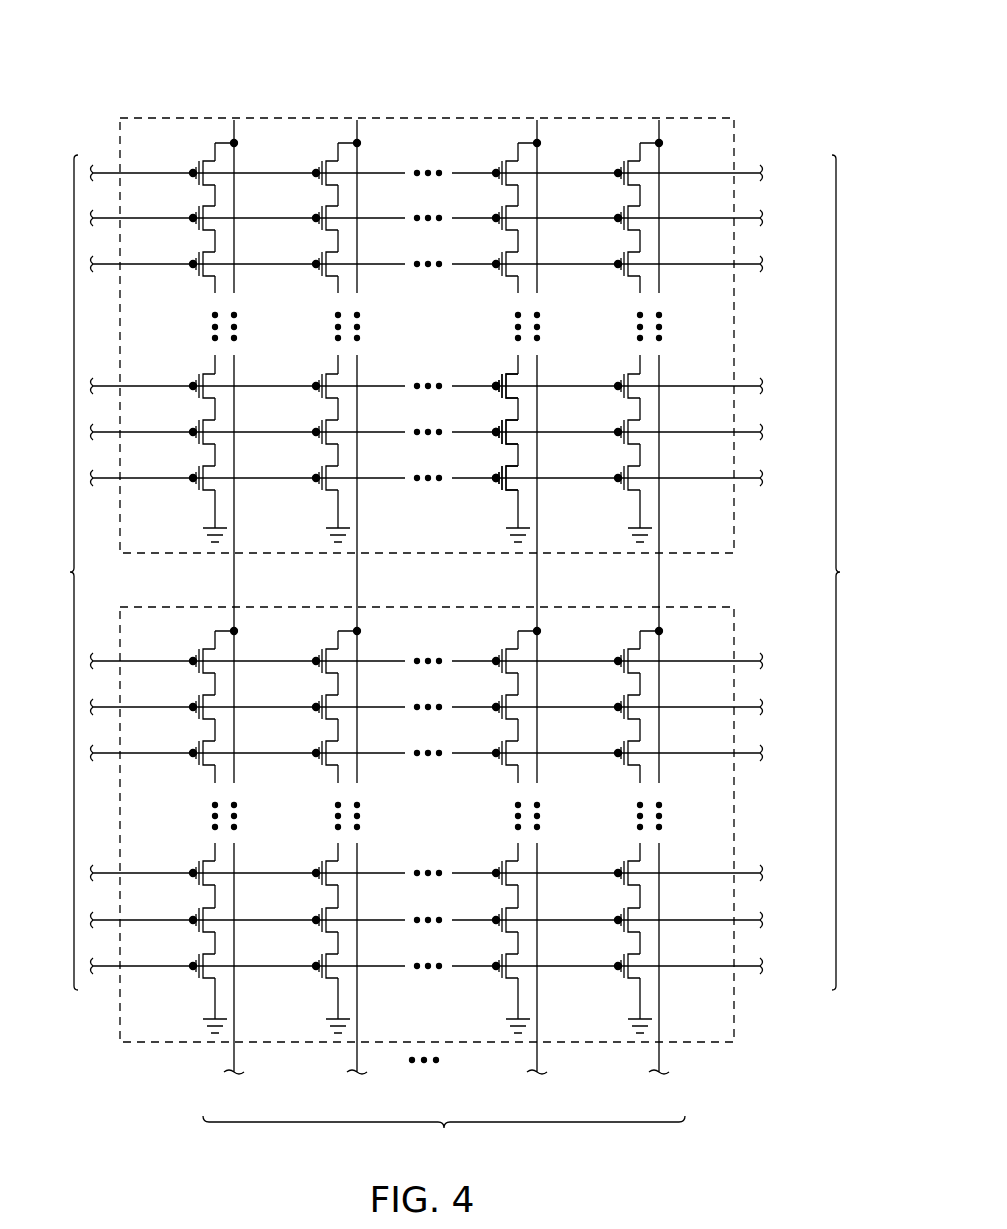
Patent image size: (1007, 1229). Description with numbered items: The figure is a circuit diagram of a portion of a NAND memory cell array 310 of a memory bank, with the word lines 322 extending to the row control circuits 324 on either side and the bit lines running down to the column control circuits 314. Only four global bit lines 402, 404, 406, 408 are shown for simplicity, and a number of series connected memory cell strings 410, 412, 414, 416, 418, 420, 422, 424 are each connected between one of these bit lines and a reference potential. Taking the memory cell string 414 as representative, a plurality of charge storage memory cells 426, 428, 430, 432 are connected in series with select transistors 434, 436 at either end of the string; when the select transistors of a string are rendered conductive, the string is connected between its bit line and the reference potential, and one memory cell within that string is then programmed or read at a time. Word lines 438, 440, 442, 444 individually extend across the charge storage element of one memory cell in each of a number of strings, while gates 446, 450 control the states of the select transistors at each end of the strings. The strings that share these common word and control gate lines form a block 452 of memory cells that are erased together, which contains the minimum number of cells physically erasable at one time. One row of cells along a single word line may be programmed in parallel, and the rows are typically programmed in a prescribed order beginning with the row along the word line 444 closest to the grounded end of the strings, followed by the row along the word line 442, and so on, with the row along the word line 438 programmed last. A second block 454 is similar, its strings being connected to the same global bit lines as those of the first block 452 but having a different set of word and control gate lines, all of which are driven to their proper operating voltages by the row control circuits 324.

The memory cell array 310 is at (398, 560).
The column control circuits 314 is at (444, 1138).
The word lines 322 is at (52, 572).
The row control circuits 324 is at (849, 572).
The global bit line 402 is at (236, 160).
The global bit line 404 is at (359, 160).
The global bit line 406 is at (539, 160).
The global bit line 408 is at (663, 160).
The memory cell string 410 is at (199, 355).
The memory cell string 412 is at (319, 355).
The memory cell string 414 is at (502, 311).
The memory cell string 416 is at (626, 355).
The memory cell string 418 is at (193, 843).
The memory cell string 420 is at (316, 843).
The memory cell string 422 is at (499, 843).
The memory cell string 424 is at (621, 843).
The charge storage memory cell 426 is at (496, 214).
The charge storage memory cell 428 is at (496, 260).
The charge storage memory cell 430 is at (496, 382).
The charge storage memory cell 432 is at (496, 428).
The select transistor 434 is at (496, 474).
The select transistor 436 is at (508, 161).
The word line 438 is at (744, 217).
The word line 440 is at (744, 262).
The word line 442 is at (744, 384).
The word line 444 is at (744, 430).
The control gate line 446 is at (744, 172).
The control gate line 450 is at (744, 476).
The block 452 is at (406, 102).
The second block 454 is at (504, 1060).